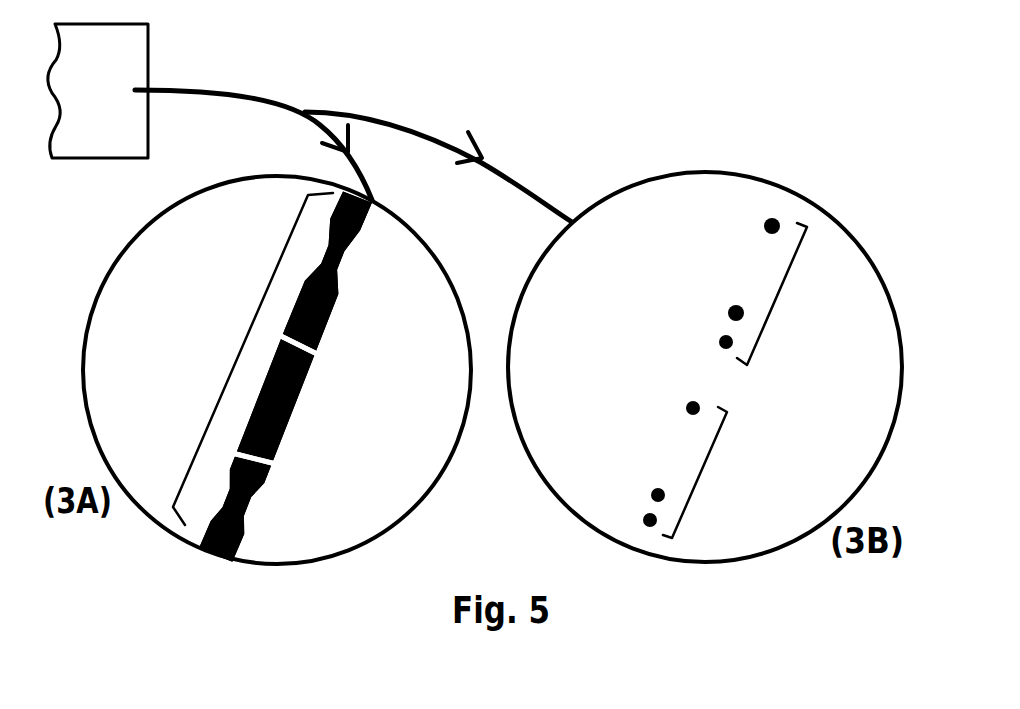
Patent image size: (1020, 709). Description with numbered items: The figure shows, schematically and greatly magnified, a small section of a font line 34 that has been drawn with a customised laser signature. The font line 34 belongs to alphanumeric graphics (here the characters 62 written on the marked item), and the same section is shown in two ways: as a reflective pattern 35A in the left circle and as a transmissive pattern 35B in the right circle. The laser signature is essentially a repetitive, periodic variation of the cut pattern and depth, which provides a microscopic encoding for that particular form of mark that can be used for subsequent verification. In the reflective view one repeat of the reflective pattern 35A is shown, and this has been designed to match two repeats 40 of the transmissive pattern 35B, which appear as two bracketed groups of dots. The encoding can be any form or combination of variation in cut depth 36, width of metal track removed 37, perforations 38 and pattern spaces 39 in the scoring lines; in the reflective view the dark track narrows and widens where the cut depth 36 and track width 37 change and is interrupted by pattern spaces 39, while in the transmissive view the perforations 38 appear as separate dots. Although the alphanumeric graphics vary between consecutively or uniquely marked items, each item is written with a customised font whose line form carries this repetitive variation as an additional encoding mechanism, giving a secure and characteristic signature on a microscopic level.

The printed characters on document 62 is at (98, 91).
The font line 34 is at (138, 69).
The reflective pattern 35A is at (107, 269).
The transmissive pattern 35B is at (863, 153).
The cut depth 36 is at (367, 247).
The width of metal track removed 37 is at (345, 306).
The perforations 38 is at (680, 426).
The pattern spaces 39 is at (315, 393).
The repeats of transmissive pattern 40 is at (777, 299).